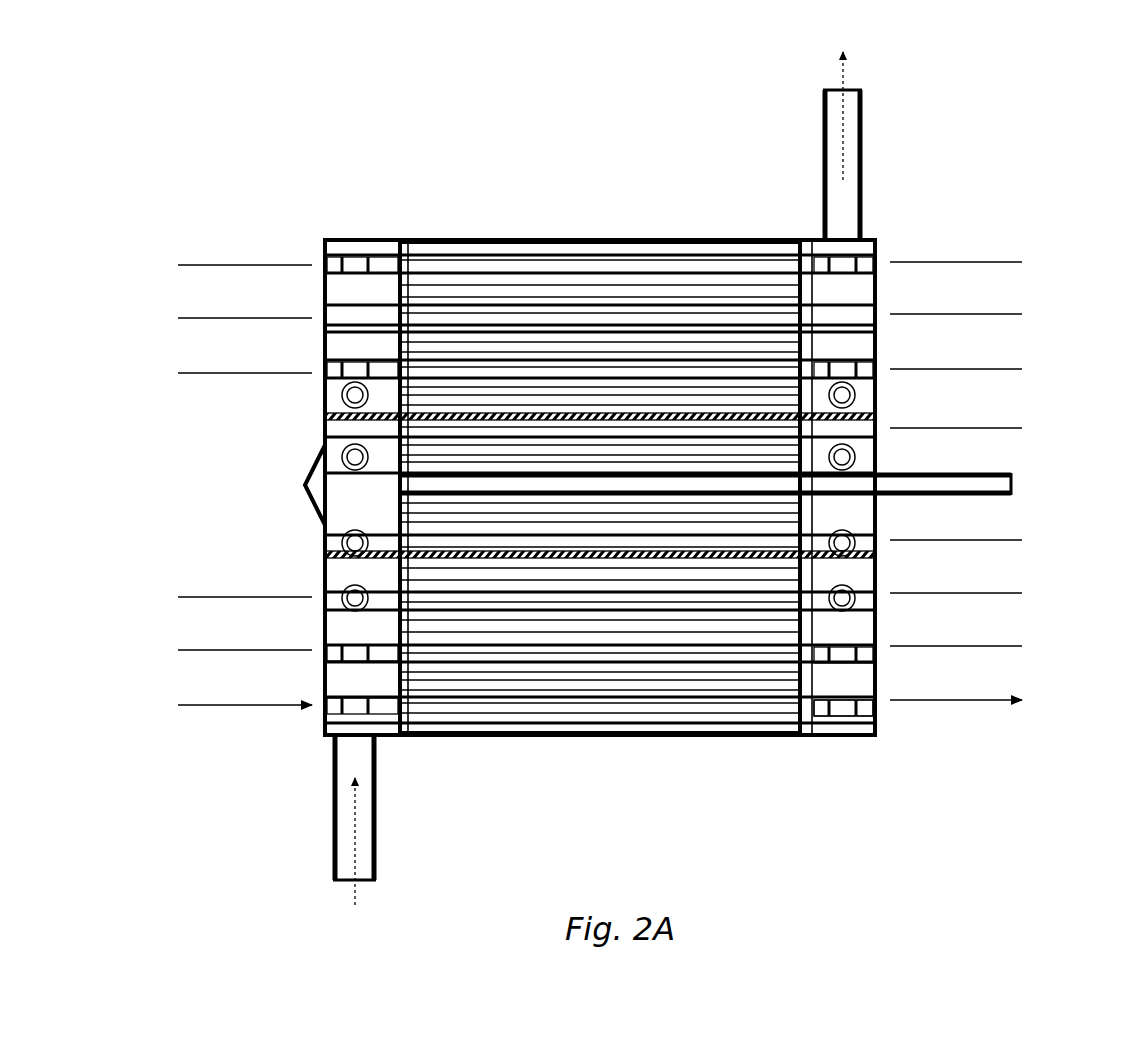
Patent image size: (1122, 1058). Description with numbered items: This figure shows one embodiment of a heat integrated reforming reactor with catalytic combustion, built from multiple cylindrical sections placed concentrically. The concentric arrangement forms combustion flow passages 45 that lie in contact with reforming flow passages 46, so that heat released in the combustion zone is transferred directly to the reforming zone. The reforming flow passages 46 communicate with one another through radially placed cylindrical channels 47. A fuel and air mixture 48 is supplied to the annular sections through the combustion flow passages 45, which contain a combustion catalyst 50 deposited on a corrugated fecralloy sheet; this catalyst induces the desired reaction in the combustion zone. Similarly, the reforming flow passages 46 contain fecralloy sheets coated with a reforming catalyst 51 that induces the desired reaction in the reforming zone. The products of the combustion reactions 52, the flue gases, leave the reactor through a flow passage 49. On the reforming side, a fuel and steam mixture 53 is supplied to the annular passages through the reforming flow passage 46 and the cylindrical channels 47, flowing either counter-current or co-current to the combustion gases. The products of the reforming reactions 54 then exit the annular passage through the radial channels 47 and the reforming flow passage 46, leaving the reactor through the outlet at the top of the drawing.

The combustion flow passage 45 is at (320, 422).
The reforming flow passage 46 is at (877, 440).
The cylindrical channel 47 is at (430, 585).
The fuel and air mixture 48 is at (312, 426).
The flow passage 49 is at (853, 707).
The combustion catalyst 50 is at (544, 262).
The reforming catalyst 51 is at (703, 290).
The products of the combustion reactions 52 is at (749, 441).
The fuel and steam mixture 53 is at (381, 836).
The products of the reforming reactions 54 is at (896, 134).